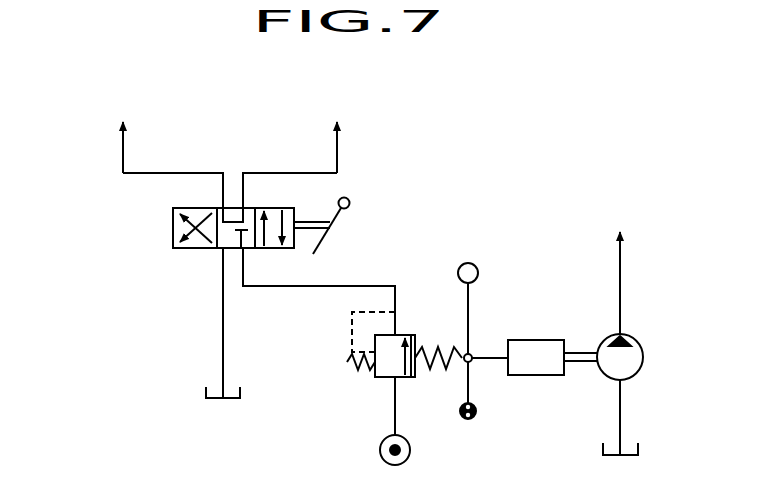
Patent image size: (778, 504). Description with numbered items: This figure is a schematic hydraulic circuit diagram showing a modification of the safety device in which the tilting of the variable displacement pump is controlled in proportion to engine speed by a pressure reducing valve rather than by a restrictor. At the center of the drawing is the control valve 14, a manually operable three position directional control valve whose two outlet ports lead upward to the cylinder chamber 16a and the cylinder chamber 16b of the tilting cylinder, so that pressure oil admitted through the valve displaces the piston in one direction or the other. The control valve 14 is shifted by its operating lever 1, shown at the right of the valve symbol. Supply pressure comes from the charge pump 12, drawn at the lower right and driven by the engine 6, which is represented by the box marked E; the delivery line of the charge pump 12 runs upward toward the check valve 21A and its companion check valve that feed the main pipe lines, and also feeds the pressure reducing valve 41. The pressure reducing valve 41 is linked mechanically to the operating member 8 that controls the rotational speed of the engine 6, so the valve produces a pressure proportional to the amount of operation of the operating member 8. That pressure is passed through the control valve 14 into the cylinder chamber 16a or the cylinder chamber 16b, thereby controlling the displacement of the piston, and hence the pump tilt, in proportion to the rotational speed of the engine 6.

The operating lever 1 is at (343, 212).
The engine 6 is at (538, 376).
The operating member 8 is at (478, 268).
The charge pump 12 is at (641, 370).
The control valve 14 is at (172, 230).
The cylinder chamber 16a is at (356, 121).
The cylinder chamber 16b is at (120, 121).
The check valve 21A is at (621, 258).
The pressure reducing valve 41 is at (380, 380).